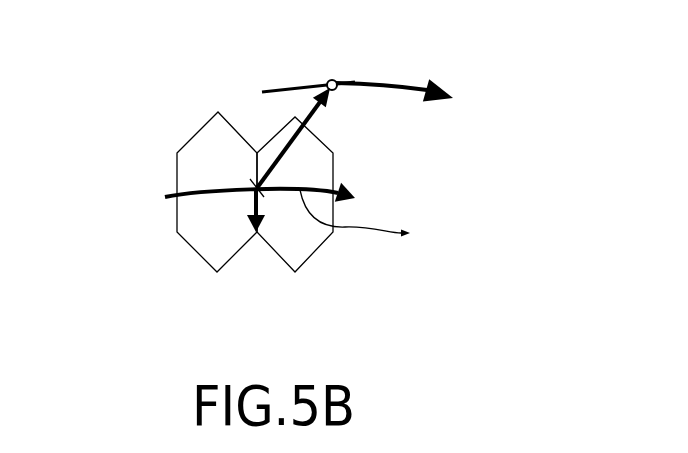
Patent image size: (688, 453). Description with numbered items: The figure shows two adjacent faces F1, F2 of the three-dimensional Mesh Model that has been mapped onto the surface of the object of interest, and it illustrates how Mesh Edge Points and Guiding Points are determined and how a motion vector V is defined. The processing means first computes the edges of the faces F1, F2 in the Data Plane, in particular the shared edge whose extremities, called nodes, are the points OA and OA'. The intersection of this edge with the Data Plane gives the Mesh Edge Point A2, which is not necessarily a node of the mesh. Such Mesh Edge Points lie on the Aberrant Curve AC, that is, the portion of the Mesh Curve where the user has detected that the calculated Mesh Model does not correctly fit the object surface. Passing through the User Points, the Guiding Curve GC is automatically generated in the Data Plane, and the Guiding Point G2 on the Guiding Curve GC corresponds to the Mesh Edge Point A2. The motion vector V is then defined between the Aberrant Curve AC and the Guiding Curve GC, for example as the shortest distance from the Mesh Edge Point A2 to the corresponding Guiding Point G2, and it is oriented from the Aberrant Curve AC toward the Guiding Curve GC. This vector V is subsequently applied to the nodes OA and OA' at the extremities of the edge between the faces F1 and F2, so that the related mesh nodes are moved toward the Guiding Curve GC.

The mesh face F1 is at (216, 124).
The mesh face F2 is at (329, 182).
The Guiding Point G2 is at (308, 74).
The Guiding Curve GC is at (423, 76).
The motion vector V is at (295, 160).
The Mesh Edge Point A2 is at (246, 181).
The mesh node OA is at (173, 139).
The mesh node OA' is at (170, 242).
The Aberrant Curve AC is at (368, 222).